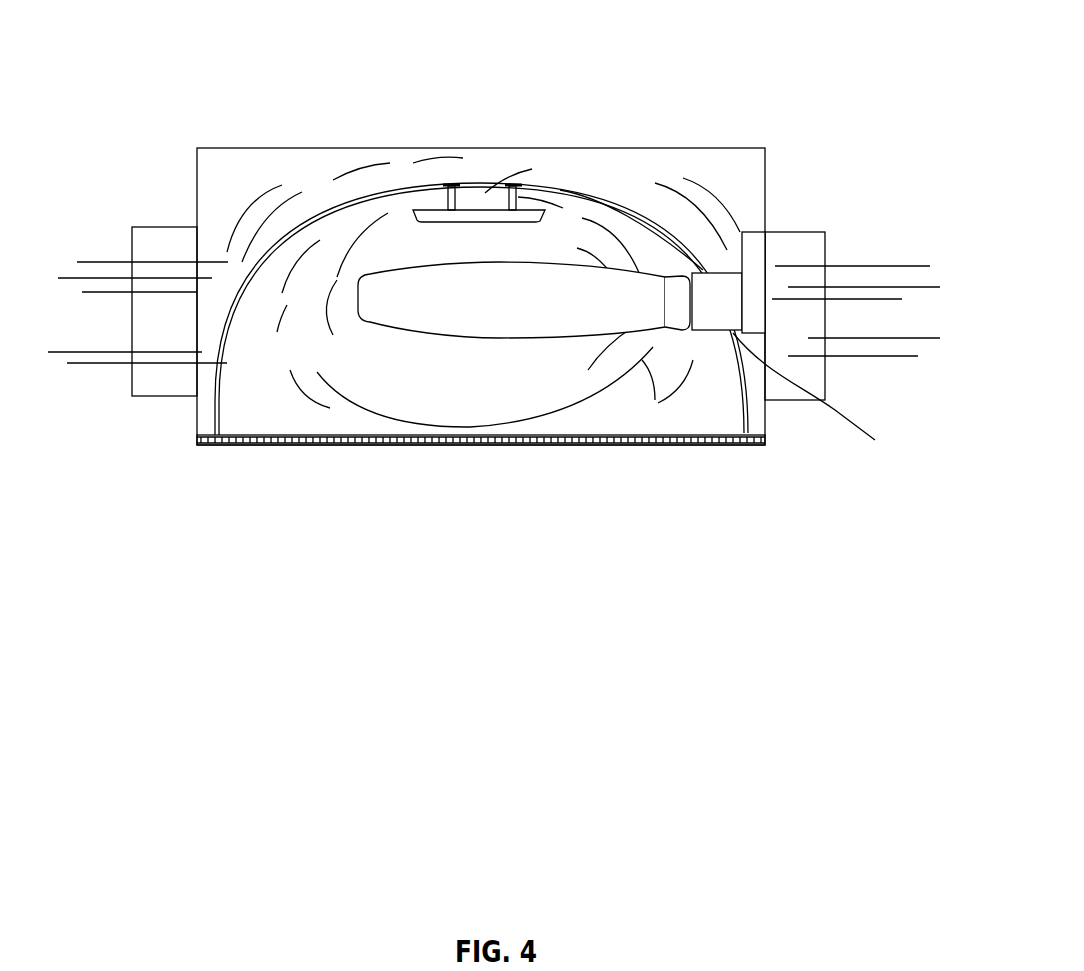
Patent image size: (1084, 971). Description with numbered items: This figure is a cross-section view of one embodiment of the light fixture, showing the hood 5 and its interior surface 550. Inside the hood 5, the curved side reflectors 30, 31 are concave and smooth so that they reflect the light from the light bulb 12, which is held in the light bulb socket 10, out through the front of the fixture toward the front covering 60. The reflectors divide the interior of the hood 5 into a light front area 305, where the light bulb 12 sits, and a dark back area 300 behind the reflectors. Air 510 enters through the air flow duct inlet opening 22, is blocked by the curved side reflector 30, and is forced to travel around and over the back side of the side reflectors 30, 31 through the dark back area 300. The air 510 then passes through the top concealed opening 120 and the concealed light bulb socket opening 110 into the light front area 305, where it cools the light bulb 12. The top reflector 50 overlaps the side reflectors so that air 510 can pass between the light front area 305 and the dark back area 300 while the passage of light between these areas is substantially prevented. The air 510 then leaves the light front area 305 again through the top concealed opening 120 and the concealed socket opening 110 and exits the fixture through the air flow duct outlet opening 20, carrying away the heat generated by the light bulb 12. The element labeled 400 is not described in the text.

The hood 5 is at (725, 148).
The light bulb socket 10 is at (729, 293).
The light bulb 12 is at (645, 290).
The air flow duct outlet opening 20 is at (810, 258).
The air flow duct inlet opening 22 is at (162, 248).
The curved side reflector 30 is at (333, 200).
The curved side reflector 31 is at (640, 213).
The top reflector 50 is at (497, 212).
The front covering 60 is at (738, 445).
The concealed light bulb socket opening 110 is at (829, 399).
The top concealed opening 120 is at (441, 187).
The dark back area 300 is at (248, 158).
The light front area 305 is at (537, 397).
The flow openings 400 is at (437, 155).
The air 510 is at (243, 191).
The interior surface 550 is at (360, 150).